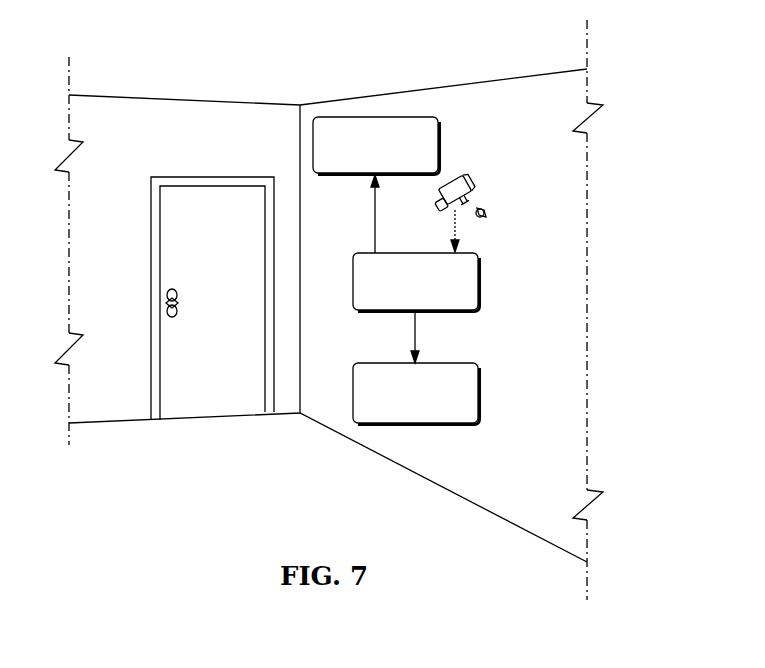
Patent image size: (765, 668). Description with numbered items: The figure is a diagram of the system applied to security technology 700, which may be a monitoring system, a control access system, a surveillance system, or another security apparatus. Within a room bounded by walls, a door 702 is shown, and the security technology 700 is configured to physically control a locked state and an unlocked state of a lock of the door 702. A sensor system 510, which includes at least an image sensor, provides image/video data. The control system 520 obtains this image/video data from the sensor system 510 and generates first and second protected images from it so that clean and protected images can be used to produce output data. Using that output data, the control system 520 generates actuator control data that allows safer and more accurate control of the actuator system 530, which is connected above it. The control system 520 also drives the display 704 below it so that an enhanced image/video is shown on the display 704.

The security technology 700 is at (469, 53).
The door 702 is at (227, 271).
The sensor system 510 is at (478, 184).
The control system 520 is at (480, 283).
The actuator system 530 is at (440, 140).
The display 704 is at (480, 395).